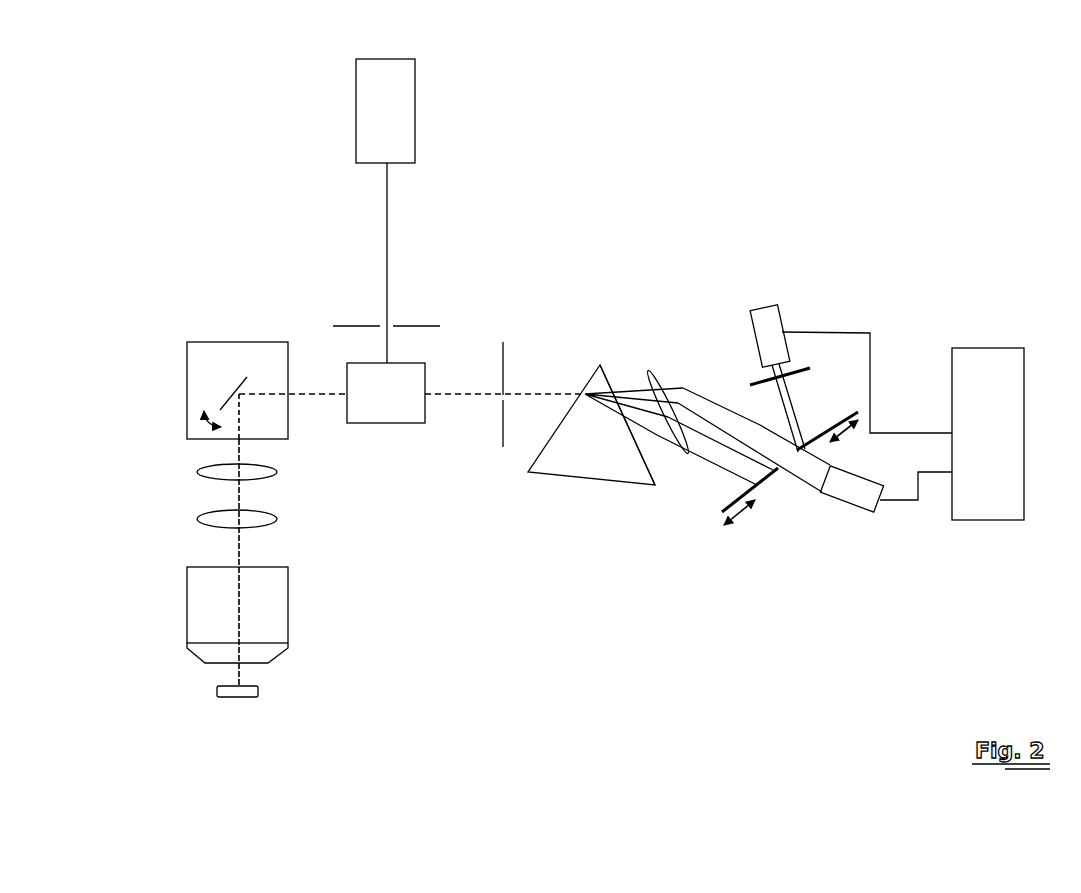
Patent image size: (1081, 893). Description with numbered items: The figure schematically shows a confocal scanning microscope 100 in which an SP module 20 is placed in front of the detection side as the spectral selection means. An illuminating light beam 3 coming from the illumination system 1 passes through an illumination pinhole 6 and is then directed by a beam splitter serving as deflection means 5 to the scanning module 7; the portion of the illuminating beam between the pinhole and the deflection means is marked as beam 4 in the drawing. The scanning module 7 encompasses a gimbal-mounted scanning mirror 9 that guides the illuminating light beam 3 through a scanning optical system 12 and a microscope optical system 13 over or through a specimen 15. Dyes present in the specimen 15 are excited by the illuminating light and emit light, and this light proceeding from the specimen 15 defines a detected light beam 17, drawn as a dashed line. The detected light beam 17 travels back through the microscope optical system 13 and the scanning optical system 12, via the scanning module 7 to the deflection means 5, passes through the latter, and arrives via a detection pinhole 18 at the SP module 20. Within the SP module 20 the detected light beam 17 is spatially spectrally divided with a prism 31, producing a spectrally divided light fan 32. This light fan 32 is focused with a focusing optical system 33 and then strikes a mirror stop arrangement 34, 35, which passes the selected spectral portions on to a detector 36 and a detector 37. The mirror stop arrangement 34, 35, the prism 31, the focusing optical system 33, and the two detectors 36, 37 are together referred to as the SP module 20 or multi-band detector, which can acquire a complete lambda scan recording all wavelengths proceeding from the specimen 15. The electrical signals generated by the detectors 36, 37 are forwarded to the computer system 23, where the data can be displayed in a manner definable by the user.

The illumination system 1 is at (403, 92).
The illuminating light beam 3 is at (386, 192).
The illumination light beam 4 is at (386, 298).
The deflection means 5 is at (403, 415).
The illumination pinhole 6 is at (346, 327).
The scanning module 7 is at (212, 342).
The scanning mirror 9 is at (230, 400).
The scanning optical system 12 is at (217, 472).
The microscope optical system 13 is at (195, 587).
The specimen 15 is at (221, 688).
The detected light beam 17 is at (434, 393).
The detection pinhole 18 is at (507, 360).
The SP module 20 is at (716, 356).
The computer system 23 is at (1003, 367).
The prism 31 is at (592, 473).
The spectrally divided light fan 32 is at (625, 386).
The focusing optical system 33 is at (648, 452).
The mirror stop 34 is at (767, 474).
The mirror stop 35 is at (820, 432).
The detector 36 is at (823, 492).
The detector 37 is at (750, 312).
The confocal scanning microscope 100 is at (450, 296).